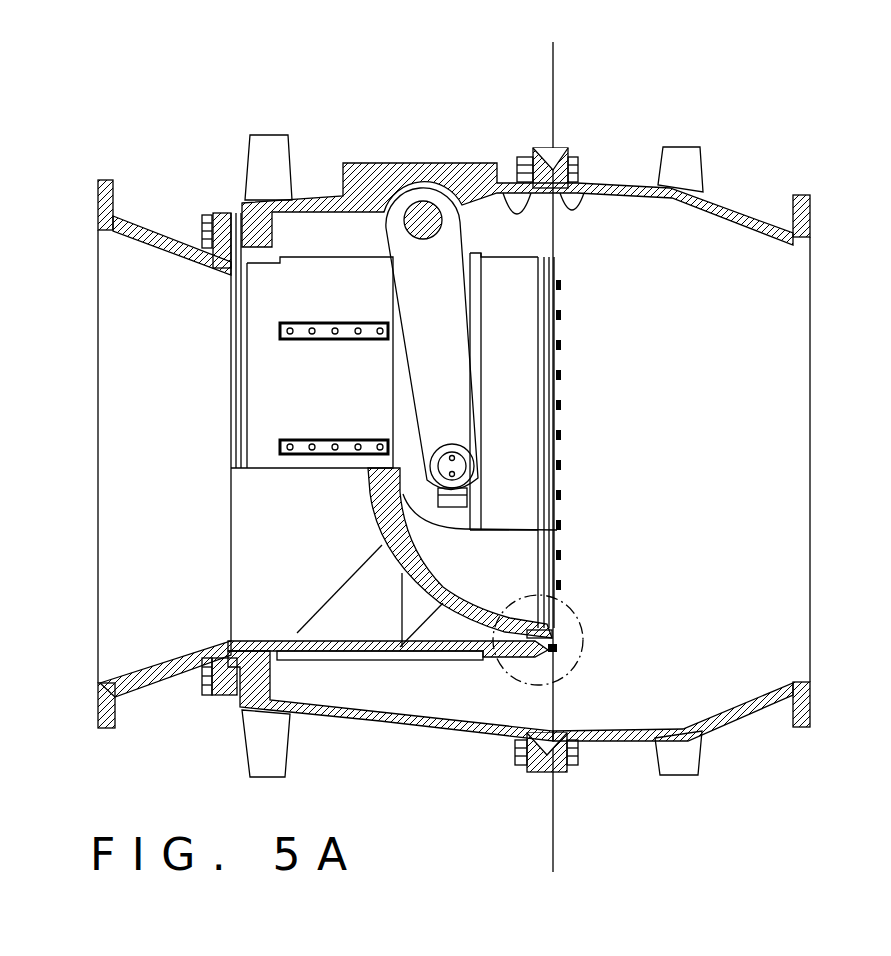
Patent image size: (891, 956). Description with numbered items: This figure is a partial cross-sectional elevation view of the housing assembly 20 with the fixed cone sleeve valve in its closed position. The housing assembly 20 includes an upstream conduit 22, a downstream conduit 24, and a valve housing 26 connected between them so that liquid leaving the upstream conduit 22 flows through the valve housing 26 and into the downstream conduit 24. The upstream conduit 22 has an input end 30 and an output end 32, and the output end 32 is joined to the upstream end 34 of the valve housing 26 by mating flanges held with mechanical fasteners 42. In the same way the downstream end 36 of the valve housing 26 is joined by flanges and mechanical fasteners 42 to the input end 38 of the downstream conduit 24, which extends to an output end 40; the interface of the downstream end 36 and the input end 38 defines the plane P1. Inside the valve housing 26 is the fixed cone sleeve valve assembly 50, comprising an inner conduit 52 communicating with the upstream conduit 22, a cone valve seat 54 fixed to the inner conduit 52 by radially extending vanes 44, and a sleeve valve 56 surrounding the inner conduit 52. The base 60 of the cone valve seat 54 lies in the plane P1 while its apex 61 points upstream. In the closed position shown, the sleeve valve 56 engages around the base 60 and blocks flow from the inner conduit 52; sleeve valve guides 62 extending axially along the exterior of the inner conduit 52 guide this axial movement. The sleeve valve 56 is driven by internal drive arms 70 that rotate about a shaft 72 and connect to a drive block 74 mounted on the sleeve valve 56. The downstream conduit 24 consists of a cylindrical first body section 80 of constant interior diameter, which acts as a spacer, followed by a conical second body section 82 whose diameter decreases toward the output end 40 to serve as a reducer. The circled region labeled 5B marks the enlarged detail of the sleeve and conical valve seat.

The housing assembly 20 is at (752, 128).
The upstream conduit 22 is at (148, 680).
The downstream conduit 24 is at (723, 728).
The valve housing 26 is at (444, 740).
The input end 30 is at (100, 236).
The output end 32 is at (226, 270).
The upstream end 34 is at (233, 640).
The downstream end 36 is at (498, 180).
The input end 38 is at (584, 186).
The output end 40 is at (800, 240).
The mechanical fasteners 42 is at (205, 213).
The vanes 44 is at (323, 600).
The fixed cone sleeve valve assembly 50 is at (612, 262).
The inner conduit 52 is at (323, 293).
The cone valve seat 54 is at (397, 667).
The sleeve valve 56 is at (470, 247).
The base 60 is at (560, 464).
The apex 61 is at (367, 488).
The sleeve valve guides 62 is at (347, 323).
The internal drive arms 70 is at (437, 375).
The shaft 72 is at (413, 200).
The drive block 74 is at (467, 487).
The first body section 80 is at (610, 730).
The second body section 82 is at (735, 700).
The plane P1 is at (572, 451).
The enlarged detail of portions of the sleeve and conical valve seat 5B is at (590, 620).